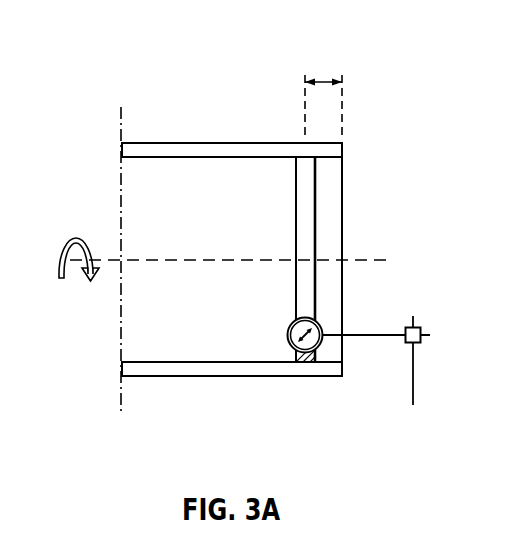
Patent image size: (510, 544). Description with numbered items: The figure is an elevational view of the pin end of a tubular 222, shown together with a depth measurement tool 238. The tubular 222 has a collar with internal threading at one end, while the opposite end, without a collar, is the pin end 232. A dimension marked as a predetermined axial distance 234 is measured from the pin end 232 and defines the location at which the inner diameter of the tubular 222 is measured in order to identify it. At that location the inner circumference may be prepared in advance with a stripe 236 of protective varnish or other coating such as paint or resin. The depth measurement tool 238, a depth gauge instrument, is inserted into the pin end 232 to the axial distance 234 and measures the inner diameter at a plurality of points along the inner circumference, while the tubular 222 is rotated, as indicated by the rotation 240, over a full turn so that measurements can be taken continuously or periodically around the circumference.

The tubular 222 is at (228, 232).
The pin end 232 is at (228, 150).
The predetermined axial distance 234 is at (323, 78).
The stripe of protective varnish 236 is at (305, 203).
The depth measurement tool 238 is at (365, 337).
The rotation 240 is at (72, 238).